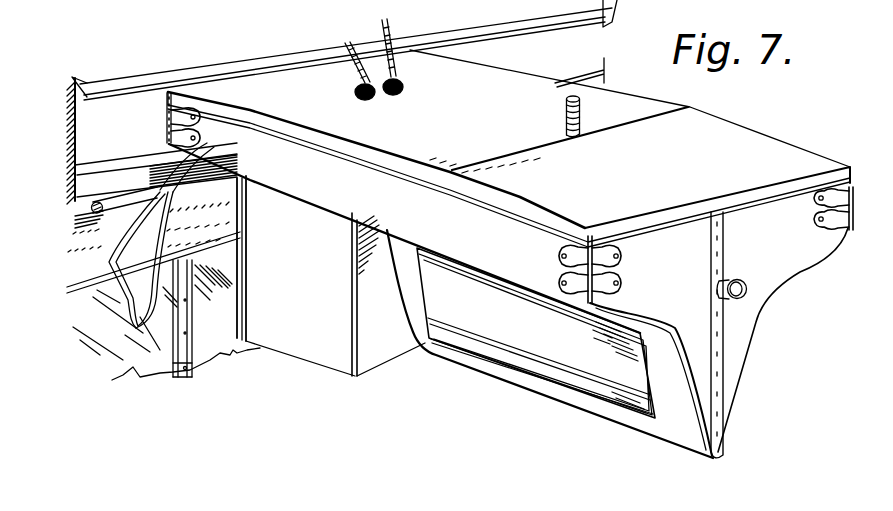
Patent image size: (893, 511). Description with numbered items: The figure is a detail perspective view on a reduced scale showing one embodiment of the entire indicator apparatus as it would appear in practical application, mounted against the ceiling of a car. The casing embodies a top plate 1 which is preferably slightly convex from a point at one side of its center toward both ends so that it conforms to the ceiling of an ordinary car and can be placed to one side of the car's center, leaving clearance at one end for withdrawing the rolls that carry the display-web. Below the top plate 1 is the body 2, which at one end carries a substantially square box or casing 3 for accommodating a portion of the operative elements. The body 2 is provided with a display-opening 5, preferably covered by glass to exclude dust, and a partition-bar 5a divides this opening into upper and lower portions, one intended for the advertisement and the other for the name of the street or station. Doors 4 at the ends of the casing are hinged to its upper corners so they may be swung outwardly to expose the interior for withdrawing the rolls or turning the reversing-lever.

The top plate 1 is at (424, 138).
The body 2 is at (510, 275).
The box or casing 3 is at (297, 276).
The doors 4 is at (750, 311).
The display-opening 5 is at (443, 272).
The partition-bar 5a is at (563, 361).